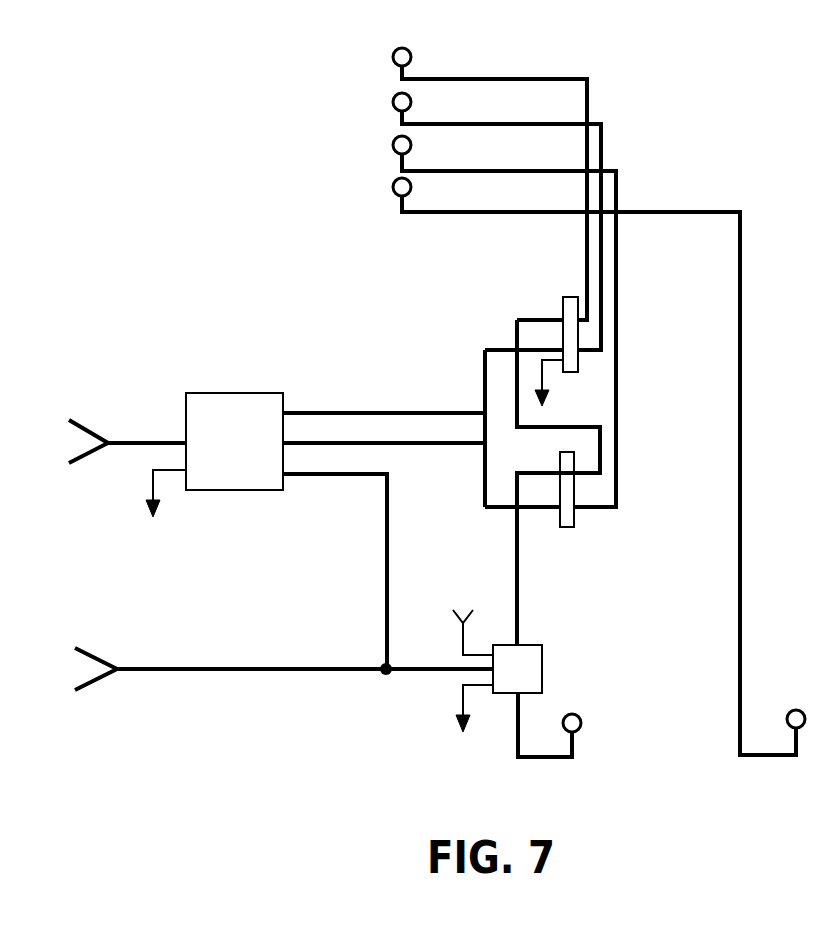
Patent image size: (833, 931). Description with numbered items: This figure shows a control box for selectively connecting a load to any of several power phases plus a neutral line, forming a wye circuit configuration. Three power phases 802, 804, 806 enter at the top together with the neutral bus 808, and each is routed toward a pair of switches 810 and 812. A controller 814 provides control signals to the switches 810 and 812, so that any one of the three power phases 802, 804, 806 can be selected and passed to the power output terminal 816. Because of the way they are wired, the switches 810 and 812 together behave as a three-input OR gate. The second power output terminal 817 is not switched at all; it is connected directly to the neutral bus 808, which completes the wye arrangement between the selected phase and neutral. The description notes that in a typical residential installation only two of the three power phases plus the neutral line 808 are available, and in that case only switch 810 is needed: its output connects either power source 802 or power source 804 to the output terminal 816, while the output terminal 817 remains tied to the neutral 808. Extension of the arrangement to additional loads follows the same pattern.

The power phase 802 is at (392, 56).
The power phase 804 is at (392, 101).
The power phase 806 is at (392, 144).
The neutral bus 808 is at (392, 186).
The switch 810 is at (570, 372).
The switch 812 is at (567, 527).
The controller 814 is at (232, 393).
The power output terminal 816 is at (571, 714).
The power output terminal 817 is at (794, 710).